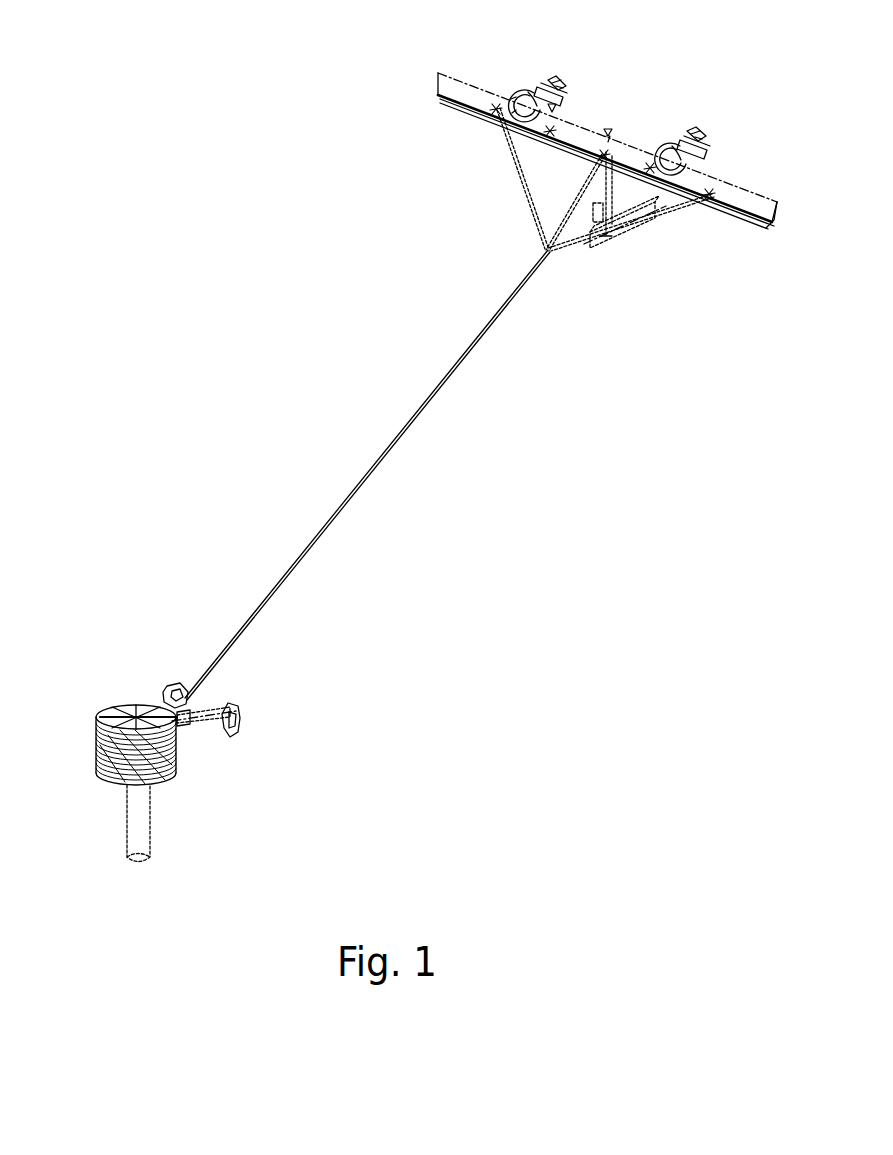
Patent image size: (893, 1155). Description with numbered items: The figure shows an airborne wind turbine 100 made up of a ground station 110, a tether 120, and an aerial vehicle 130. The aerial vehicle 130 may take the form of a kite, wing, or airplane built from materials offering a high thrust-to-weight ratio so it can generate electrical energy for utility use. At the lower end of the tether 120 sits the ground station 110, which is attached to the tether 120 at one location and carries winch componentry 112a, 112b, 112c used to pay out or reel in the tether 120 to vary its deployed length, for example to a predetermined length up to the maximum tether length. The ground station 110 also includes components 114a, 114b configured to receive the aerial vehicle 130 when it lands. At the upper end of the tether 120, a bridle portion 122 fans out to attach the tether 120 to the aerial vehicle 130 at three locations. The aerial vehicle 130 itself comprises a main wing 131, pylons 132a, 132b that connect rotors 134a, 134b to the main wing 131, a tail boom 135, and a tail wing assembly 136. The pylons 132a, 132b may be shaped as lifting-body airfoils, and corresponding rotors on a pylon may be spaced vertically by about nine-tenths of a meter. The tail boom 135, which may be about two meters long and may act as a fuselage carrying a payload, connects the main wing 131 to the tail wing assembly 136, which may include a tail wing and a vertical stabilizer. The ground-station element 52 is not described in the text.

The airborne wind turbine 100 is at (257, 103).
The ground station 110 is at (63, 692).
The winch componentry 112a is at (167, 770).
The winch componentry 112b is at (138, 715).
The winch componentry 112c is at (200, 708).
The receiving component 114a is at (200, 732).
The receiving component 114b is at (177, 682).
The tether 120 is at (487, 333).
The bridle portion 122 is at (510, 152).
The aerial vehicle 130 is at (628, 135).
The main wing 131 is at (733, 187).
The pylon 132a is at (552, 107).
The pylon 132b is at (687, 157).
The rotor 134a is at (557, 78).
The rotor 134b is at (523, 90).
The tail boom 135 is at (615, 178).
The tail wing assembly 136 is at (617, 240).
The mounting shaft 52 is at (123, 810).